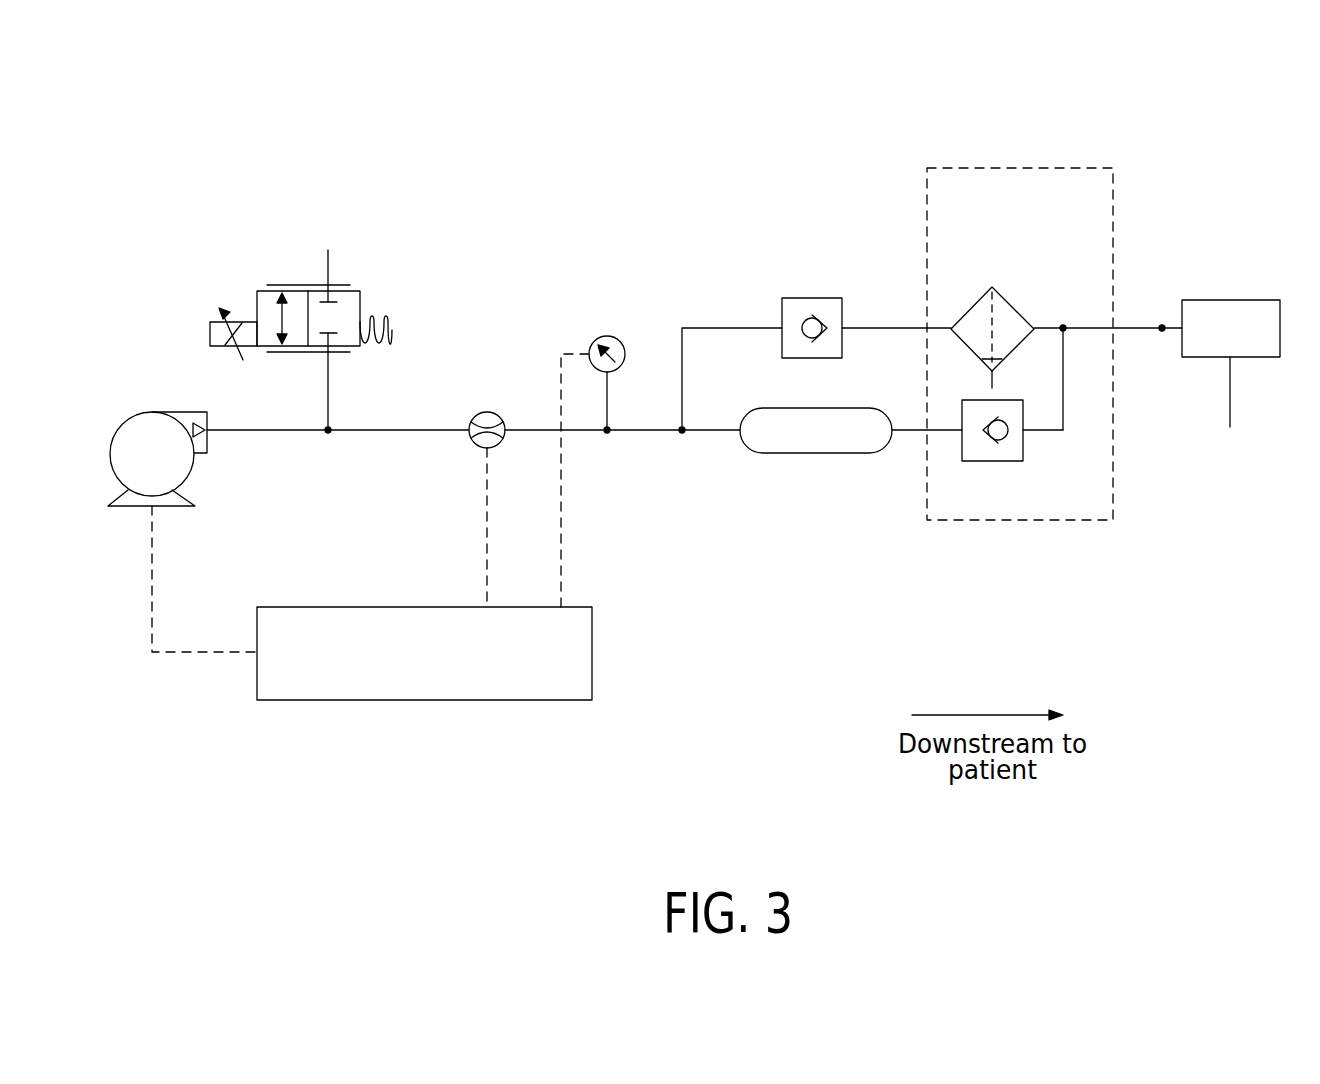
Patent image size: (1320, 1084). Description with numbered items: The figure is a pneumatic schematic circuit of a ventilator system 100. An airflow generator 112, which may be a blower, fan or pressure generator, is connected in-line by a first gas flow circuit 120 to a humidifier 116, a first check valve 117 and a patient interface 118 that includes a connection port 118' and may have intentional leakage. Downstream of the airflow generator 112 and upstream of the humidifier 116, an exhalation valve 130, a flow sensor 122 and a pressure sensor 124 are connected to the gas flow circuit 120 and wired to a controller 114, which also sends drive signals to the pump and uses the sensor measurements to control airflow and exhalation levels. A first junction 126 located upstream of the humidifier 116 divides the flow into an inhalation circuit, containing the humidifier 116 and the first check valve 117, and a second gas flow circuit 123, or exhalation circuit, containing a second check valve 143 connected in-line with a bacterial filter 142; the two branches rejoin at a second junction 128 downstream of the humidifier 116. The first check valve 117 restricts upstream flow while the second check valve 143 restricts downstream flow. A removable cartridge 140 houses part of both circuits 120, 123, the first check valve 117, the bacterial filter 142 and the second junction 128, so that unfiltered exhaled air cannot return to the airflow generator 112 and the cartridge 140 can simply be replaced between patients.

The system 100 is at (1140, 111).
The airflow generator 112 is at (125, 416).
The controller 114 is at (290, 607).
The humidifier 116 is at (822, 453).
The first check valve 117 is at (1023, 462).
The patient interface 118 is at (1231, 342).
The connection port 118' is at (1172, 270).
The first gas flow circuit 120 is at (348, 431).
The flow sensor 122 is at (469, 425).
The second gas flow circuit 123 is at (695, 328).
The pressure sensor 124 is at (590, 348).
The first junction 126 is at (679, 446).
The second junction 128 is at (1083, 344).
The exhalation valve 130 is at (257, 291).
The cartridge 140 is at (1028, 167).
The bacterial filter 142 is at (975, 305).
The second check valve 143 is at (782, 298).